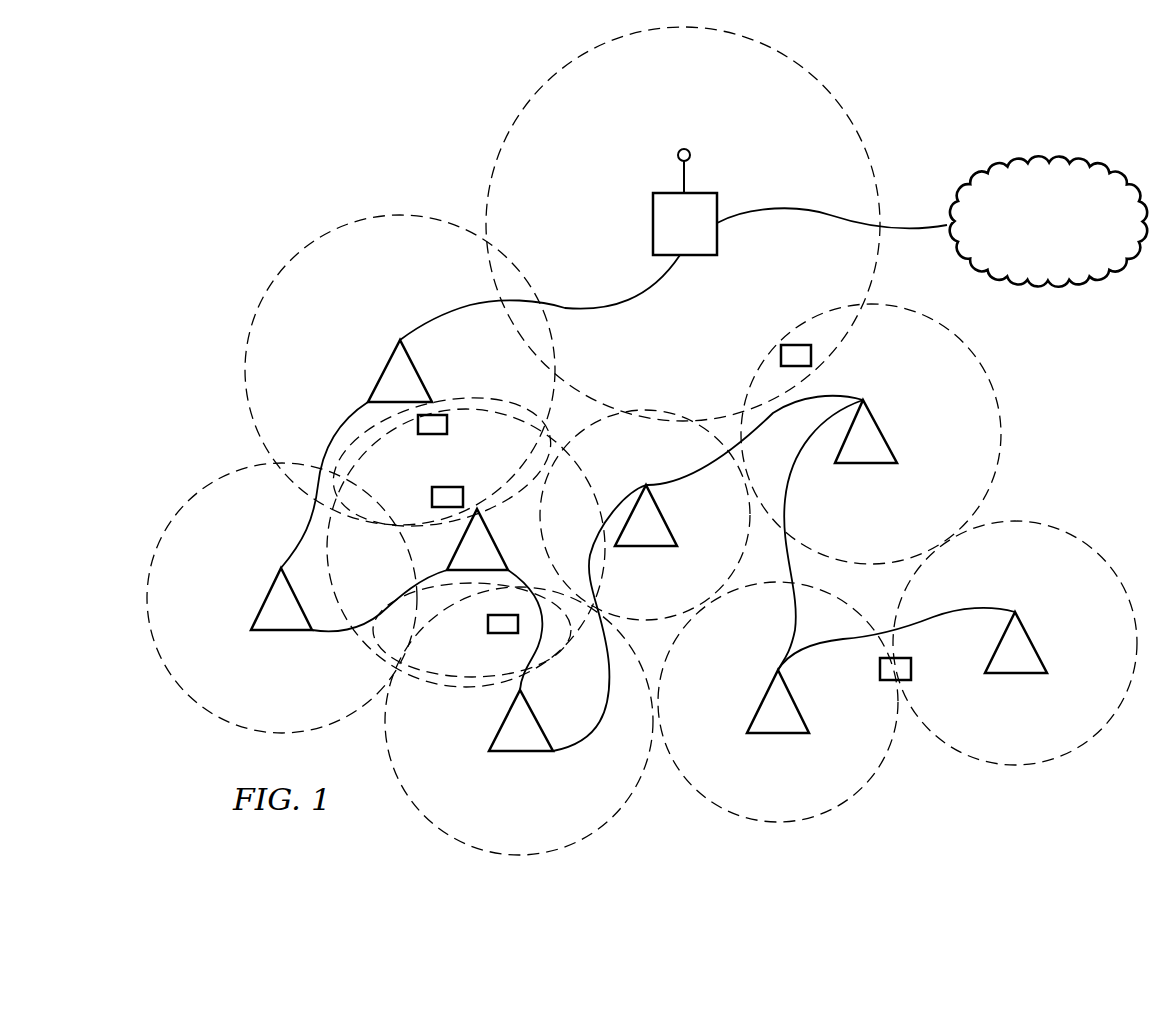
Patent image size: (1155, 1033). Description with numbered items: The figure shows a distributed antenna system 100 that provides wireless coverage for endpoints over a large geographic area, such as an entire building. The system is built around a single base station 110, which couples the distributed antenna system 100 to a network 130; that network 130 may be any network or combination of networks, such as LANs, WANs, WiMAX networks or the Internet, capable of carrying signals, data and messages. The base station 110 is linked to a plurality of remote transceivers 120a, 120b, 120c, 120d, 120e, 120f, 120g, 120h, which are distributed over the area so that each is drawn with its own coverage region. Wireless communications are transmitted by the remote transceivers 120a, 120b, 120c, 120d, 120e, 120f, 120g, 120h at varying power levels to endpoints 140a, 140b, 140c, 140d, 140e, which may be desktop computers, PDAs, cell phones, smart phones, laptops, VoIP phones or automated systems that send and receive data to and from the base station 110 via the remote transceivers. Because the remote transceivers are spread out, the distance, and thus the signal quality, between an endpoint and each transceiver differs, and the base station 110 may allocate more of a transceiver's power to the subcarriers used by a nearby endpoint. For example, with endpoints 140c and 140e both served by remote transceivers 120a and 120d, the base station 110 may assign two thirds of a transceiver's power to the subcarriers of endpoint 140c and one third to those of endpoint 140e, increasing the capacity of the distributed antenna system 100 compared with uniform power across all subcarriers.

The distributed antenna system 100 is at (368, 141).
The base station 110 is at (653, 224).
The remote transceiver 120a is at (385, 371).
The remote transceiver 120b is at (266, 599).
The remote transceiver 120c is at (520, 751).
The remote transceiver 120d is at (457, 550).
The remote transceiver 120e is at (662, 515).
The remote transceiver 120f is at (884, 440).
The remote transceiver 120g is at (778, 733).
The remote transceiver 120h is at (1029, 640).
The network 130 is at (1050, 292).
The endpoint 140a is at (488, 622).
The endpoint 140b is at (880, 668).
The endpoint 140c is at (447, 422).
The endpoint 140d is at (793, 345).
The endpoint 140e is at (432, 497).